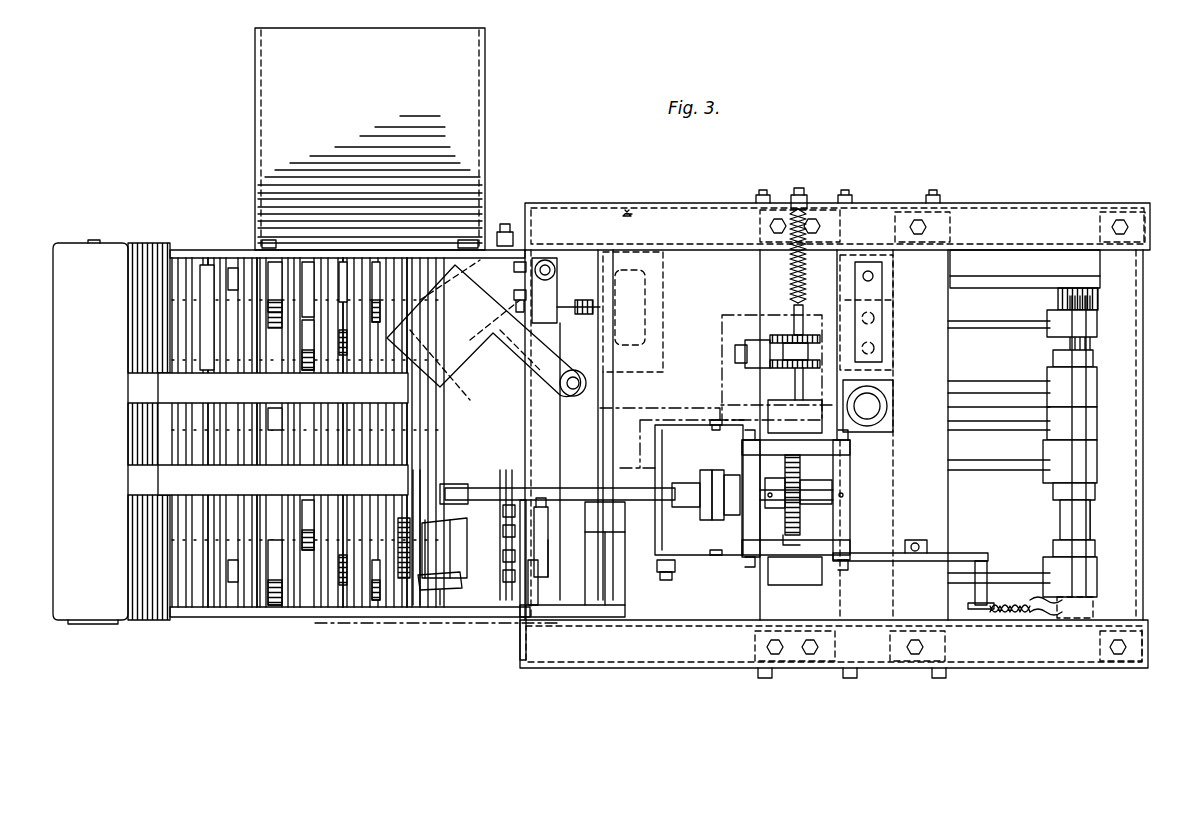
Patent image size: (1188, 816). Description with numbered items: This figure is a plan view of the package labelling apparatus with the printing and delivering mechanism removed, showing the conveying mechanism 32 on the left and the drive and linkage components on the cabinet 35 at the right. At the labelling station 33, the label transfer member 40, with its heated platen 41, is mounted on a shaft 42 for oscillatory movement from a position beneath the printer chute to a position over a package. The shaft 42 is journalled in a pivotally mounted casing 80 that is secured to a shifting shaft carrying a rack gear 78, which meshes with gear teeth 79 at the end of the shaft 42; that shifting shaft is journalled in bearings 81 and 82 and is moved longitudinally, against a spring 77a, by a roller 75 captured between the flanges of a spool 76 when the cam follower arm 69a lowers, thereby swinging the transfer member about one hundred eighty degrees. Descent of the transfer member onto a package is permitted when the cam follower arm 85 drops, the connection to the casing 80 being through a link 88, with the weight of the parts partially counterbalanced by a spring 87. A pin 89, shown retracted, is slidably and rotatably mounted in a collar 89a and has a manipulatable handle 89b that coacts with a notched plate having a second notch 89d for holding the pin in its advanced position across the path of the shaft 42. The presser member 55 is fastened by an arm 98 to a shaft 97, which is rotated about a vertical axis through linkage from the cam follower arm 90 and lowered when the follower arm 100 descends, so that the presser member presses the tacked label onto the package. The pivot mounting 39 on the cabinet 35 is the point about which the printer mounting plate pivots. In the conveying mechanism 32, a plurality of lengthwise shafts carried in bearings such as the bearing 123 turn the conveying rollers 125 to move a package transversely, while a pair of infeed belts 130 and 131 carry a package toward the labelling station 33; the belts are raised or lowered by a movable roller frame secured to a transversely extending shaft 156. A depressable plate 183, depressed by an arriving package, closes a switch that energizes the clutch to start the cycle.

The conveying mechanism 32 is at (306, 451).
The depressable plate 183 is at (160, 433).
The conveying rollers 125 is at (268, 607).
The belt 131 is at (283, 388).
The belt 130 is at (283, 480).
The bearing 123 is at (203, 268).
The presser member 55 is at (502, 228).
The cabinet 35 is at (612, 668).
The cam follower arm 69a is at (1014, 468).
The cam follower arm 90 is at (1016, 384).
The follower arm 100 is at (1000, 428).
The cam follower arm 85 is at (958, 586).
The spring 87 is at (1025, 598).
The spool 76 is at (848, 282).
The spring 77a is at (790, 270).
The roller 75 is at (772, 336).
The bearing 82 is at (812, 410).
The pivot mounting 39 is at (872, 424).
The casing 80 is at (752, 512).
The rack gear 78 is at (800, 468).
The gear teeth 79 is at (796, 518).
The bearing 81 is at (795, 578).
The link 88 is at (665, 578).
The shaft 42 is at (497, 487).
The arm 98 is at (540, 328).
The shaft 97 is at (573, 396).
The labelling station 33 is at (418, 590).
The heated platen 41 is at (444, 548).
The label transfer member 40 is at (455, 578).
The manipulatable handle 89b is at (498, 630).
The pin 89 is at (548, 512).
The collar 89a is at (550, 568).
The shaft 156 is at (604, 568).
The second notch 89d is at (540, 605).